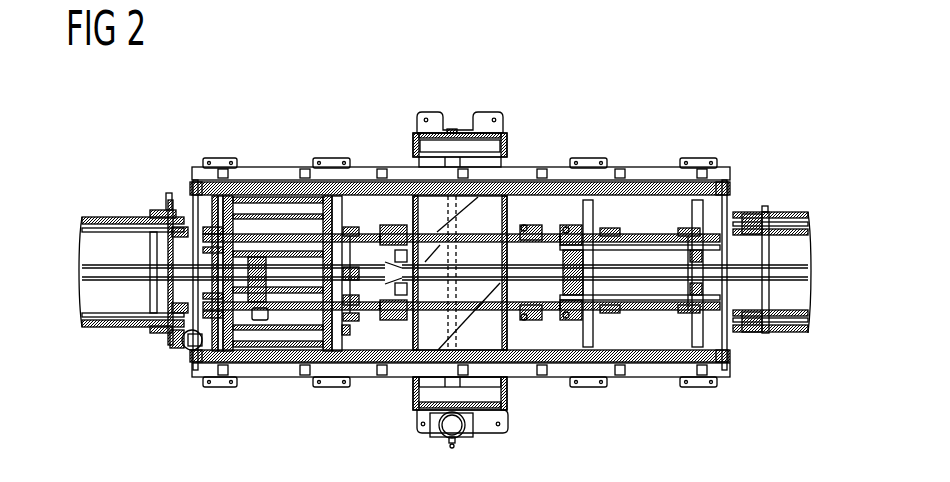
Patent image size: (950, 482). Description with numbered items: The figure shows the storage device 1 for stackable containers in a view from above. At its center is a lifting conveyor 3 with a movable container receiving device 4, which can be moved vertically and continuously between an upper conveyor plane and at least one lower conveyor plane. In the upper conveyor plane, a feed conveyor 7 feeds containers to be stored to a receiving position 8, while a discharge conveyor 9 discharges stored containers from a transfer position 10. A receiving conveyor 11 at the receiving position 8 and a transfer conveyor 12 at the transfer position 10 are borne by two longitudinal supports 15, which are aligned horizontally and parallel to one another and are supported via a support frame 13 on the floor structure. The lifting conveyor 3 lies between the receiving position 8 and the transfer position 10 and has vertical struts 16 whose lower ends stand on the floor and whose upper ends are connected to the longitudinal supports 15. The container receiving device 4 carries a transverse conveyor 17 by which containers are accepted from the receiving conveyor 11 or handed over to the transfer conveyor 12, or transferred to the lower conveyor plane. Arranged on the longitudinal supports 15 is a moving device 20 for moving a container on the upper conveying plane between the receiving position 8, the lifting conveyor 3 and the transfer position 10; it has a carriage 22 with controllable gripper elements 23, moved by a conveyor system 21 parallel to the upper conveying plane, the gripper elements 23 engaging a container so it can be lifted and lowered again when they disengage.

The storage device 1 is at (770, 88).
The lifting conveyor 3 is at (452, 112).
The container receiving device 4 is at (497, 215).
The feed conveyor 7 is at (115, 222).
The receiving position 8 is at (270, 148).
The discharge conveyor 9 is at (782, 213).
The transfer position 10 is at (596, 128).
The receiving conveyor 11 is at (272, 242).
The transfer conveyor 12 is at (628, 243).
The support frame 13 is at (219, 160).
The longitudinal supports 15 is at (367, 177).
The vertical struts 16 is at (479, 142).
The transverse conveyor 17 is at (487, 307).
The moving device 20 is at (294, 395).
The conveyor system 21 is at (398, 362).
The carriage 22 is at (337, 330).
The gripper elements 23 is at (265, 213).